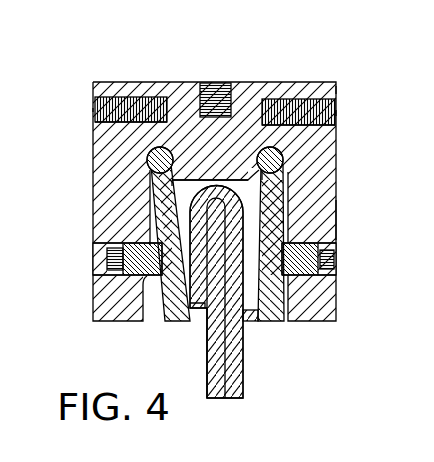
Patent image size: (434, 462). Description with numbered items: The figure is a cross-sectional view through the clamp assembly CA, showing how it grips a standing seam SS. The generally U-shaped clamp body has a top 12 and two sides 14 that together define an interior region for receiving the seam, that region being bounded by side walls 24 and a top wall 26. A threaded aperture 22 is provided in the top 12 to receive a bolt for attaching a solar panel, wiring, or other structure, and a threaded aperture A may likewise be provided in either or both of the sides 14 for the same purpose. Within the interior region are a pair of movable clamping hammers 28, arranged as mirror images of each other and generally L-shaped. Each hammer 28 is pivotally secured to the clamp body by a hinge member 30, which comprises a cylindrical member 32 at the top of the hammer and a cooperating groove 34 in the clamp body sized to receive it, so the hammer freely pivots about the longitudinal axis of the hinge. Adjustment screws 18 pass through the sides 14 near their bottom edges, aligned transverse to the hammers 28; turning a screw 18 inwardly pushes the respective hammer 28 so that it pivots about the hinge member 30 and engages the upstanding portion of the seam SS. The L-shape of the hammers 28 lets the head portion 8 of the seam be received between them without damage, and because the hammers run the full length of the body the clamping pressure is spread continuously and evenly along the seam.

The top 12 is at (318, 82).
The sides 14 is at (93, 130).
The adjustment screws 18 is at (105, 290).
The threaded aperture 22 is at (216, 82).
The side walls 24 is at (150, 312).
The top wall 26 is at (237, 147).
The clamping hammers 28 is at (176, 292).
The hinge member 30 is at (150, 163).
The cylindrical member 32 is at (118, 97).
The groove 34 is at (150, 186).
The head portion 8 is at (318, 215).
The threaded aperture A is at (92, 108).
The clamp assembly CA is at (344, 89).
The standing seam SS is at (247, 362).